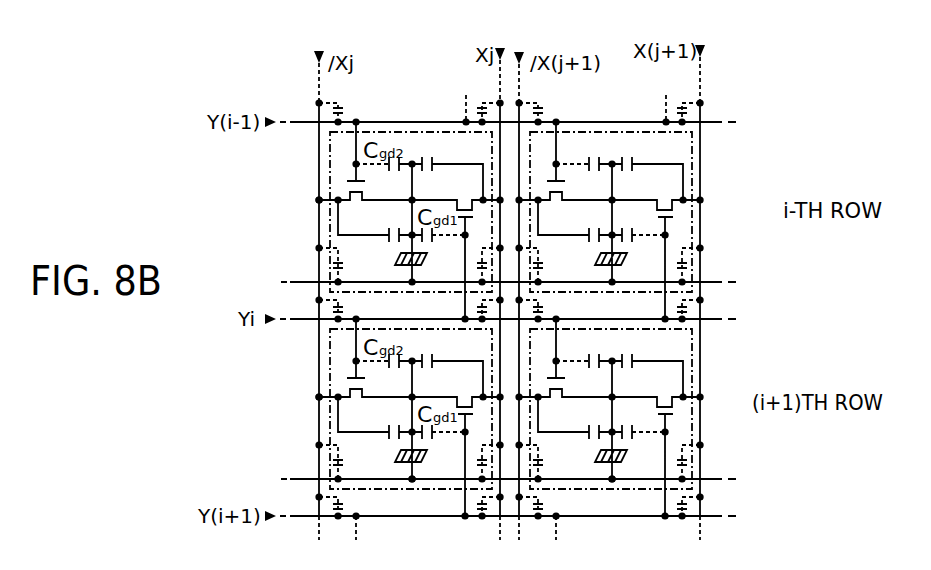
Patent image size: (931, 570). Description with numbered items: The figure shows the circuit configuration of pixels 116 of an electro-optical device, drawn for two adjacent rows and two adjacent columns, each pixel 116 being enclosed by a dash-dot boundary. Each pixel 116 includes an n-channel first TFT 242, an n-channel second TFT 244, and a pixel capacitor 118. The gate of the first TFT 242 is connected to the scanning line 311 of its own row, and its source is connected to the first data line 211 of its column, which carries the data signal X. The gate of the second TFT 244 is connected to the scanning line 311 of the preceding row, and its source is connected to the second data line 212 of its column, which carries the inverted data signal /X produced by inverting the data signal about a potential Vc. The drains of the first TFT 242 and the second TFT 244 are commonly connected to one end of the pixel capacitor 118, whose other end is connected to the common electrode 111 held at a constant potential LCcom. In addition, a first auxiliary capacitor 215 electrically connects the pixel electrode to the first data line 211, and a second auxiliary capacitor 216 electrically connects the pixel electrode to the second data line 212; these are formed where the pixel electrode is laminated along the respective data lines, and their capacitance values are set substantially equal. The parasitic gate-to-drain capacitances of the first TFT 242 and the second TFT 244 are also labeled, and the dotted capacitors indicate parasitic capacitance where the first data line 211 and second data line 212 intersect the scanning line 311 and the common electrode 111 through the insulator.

The pixel 116 is at (330, 380).
The second data line 212 is at (545, 95).
The first data line 211 is at (700, 84).
The second TFT 244 is at (363, 391).
The first TFT 242 is at (468, 395).
The first auxiliary capacitor 215 is at (440, 356).
The second auxiliary capacitor 216 is at (387, 430).
The pixel capacitor 118 is at (399, 455).
The scanning line 311 is at (730, 349).
The common electrode 111 is at (710, 479).